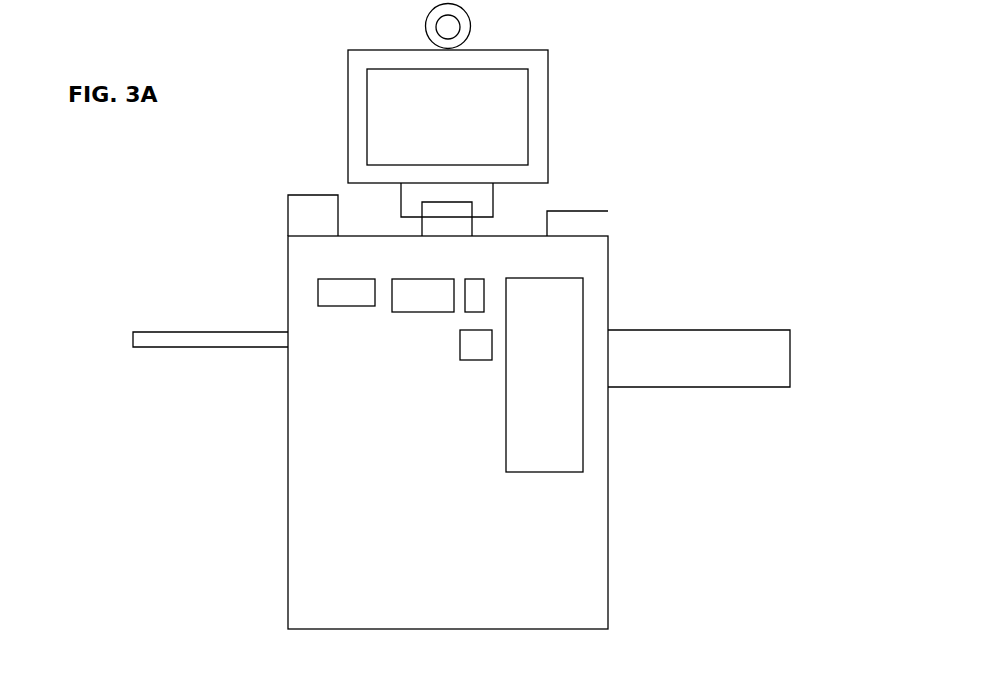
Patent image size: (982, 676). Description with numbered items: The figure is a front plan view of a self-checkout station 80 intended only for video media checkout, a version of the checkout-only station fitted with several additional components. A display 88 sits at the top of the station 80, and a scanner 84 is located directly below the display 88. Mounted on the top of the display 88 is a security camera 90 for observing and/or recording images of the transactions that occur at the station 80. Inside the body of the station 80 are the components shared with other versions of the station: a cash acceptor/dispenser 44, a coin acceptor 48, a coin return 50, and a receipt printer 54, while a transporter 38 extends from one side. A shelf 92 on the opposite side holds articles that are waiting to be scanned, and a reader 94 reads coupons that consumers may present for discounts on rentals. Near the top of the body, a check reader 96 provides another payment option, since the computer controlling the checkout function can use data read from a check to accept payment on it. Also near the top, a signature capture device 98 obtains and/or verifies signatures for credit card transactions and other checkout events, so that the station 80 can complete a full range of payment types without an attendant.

The station 80 is at (720, 104).
The display 88 is at (548, 120).
The security camera 90 is at (468, 15).
The scanner 84 is at (483, 211).
The check reader 96 is at (287, 218).
The signature capture device 98 is at (608, 223).
The shelf 92 is at (192, 347).
The transporter 38 is at (740, 330).
The reader 94 is at (337, 307).
The cash acceptor/dispenser 44 is at (413, 312).
The coin acceptor 48 is at (474, 277).
The coin return 50 is at (473, 362).
The receipt printer 54 is at (540, 473).